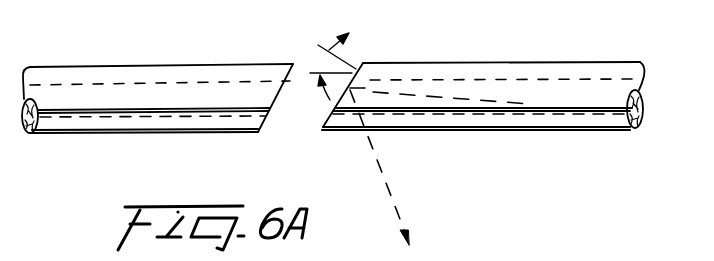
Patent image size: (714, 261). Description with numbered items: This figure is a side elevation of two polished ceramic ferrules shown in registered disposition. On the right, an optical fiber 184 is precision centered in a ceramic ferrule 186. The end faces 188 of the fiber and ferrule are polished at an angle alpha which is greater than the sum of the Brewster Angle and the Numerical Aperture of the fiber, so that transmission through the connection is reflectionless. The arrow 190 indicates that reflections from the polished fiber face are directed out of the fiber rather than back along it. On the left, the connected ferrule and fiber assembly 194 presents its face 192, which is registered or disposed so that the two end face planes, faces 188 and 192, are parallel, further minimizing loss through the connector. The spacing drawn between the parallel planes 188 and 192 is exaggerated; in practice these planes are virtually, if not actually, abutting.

The optical fiber 184 is at (641, 99).
The ceramic ferrule 186 is at (514, 60).
The end face 188 is at (329, 117).
The arrow 190 is at (390, 185).
The face of the connected ferrule and fiber assembly 192 is at (258, 122).
The connected ferrule and fiber assembly 194 is at (132, 64).